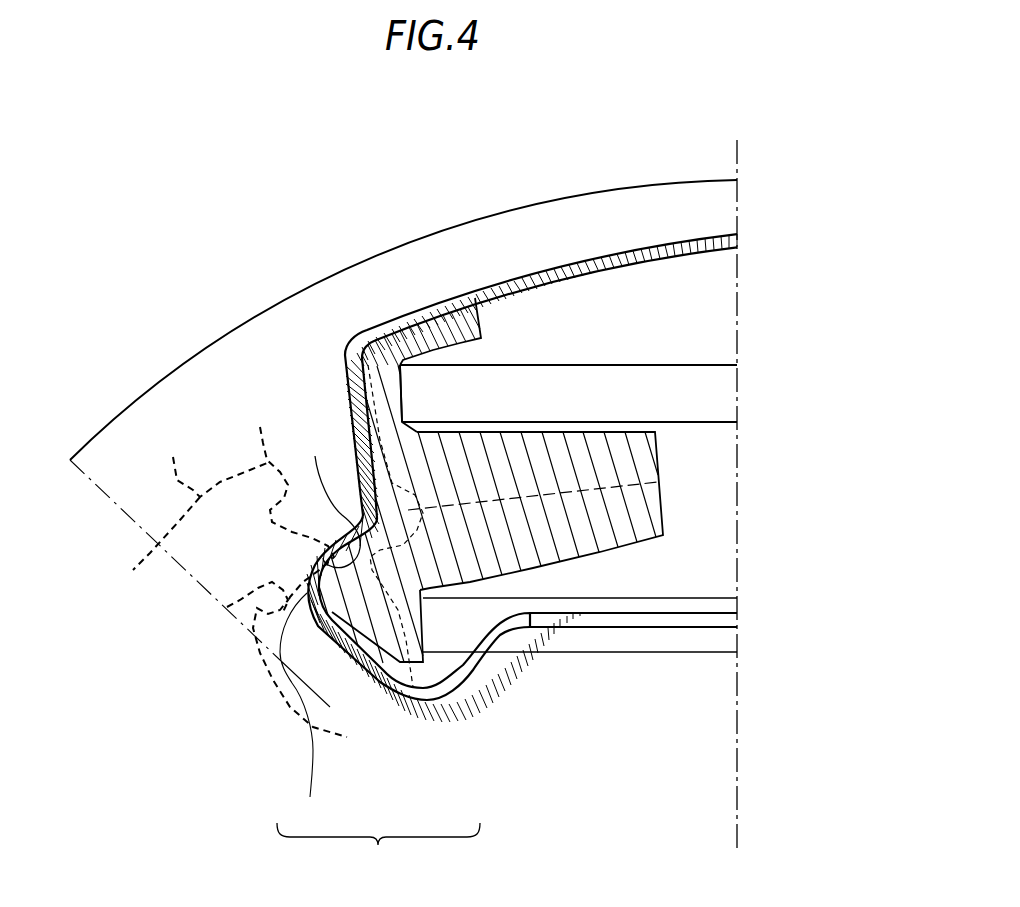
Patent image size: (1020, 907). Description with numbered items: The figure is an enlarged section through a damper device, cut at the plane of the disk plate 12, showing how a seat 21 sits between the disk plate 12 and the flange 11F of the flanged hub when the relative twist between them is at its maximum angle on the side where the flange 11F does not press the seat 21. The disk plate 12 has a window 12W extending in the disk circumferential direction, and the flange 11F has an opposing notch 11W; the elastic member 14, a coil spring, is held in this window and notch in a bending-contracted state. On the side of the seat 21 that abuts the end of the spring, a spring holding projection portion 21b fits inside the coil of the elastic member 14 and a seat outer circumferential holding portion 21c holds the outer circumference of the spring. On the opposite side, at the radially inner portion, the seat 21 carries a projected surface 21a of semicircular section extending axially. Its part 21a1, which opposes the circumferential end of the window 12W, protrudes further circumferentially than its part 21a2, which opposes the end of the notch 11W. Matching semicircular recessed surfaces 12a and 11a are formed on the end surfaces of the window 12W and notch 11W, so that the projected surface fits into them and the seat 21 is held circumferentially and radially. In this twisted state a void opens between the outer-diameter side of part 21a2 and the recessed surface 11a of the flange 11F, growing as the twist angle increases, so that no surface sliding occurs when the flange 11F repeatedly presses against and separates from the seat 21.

The disk plate 12 is at (198, 368).
The window 12W is at (622, 253).
The recessed surface 12a is at (328, 499).
The elastic member 14 is at (642, 384).
The flange 11F is at (200, 499).
The notch 11W is at (288, 504).
The recessed surface 11a is at (227, 607).
The seat 21 is at (703, 484).
The projected surface 21a is at (378, 851).
The part opposing the window end surface 21a1 is at (307, 708).
The part opposing the notch end surface 21a2 is at (413, 687).
The spring holding projection portion 21b is at (585, 533).
The seat outer circumferential holding portion 21c is at (463, 316).